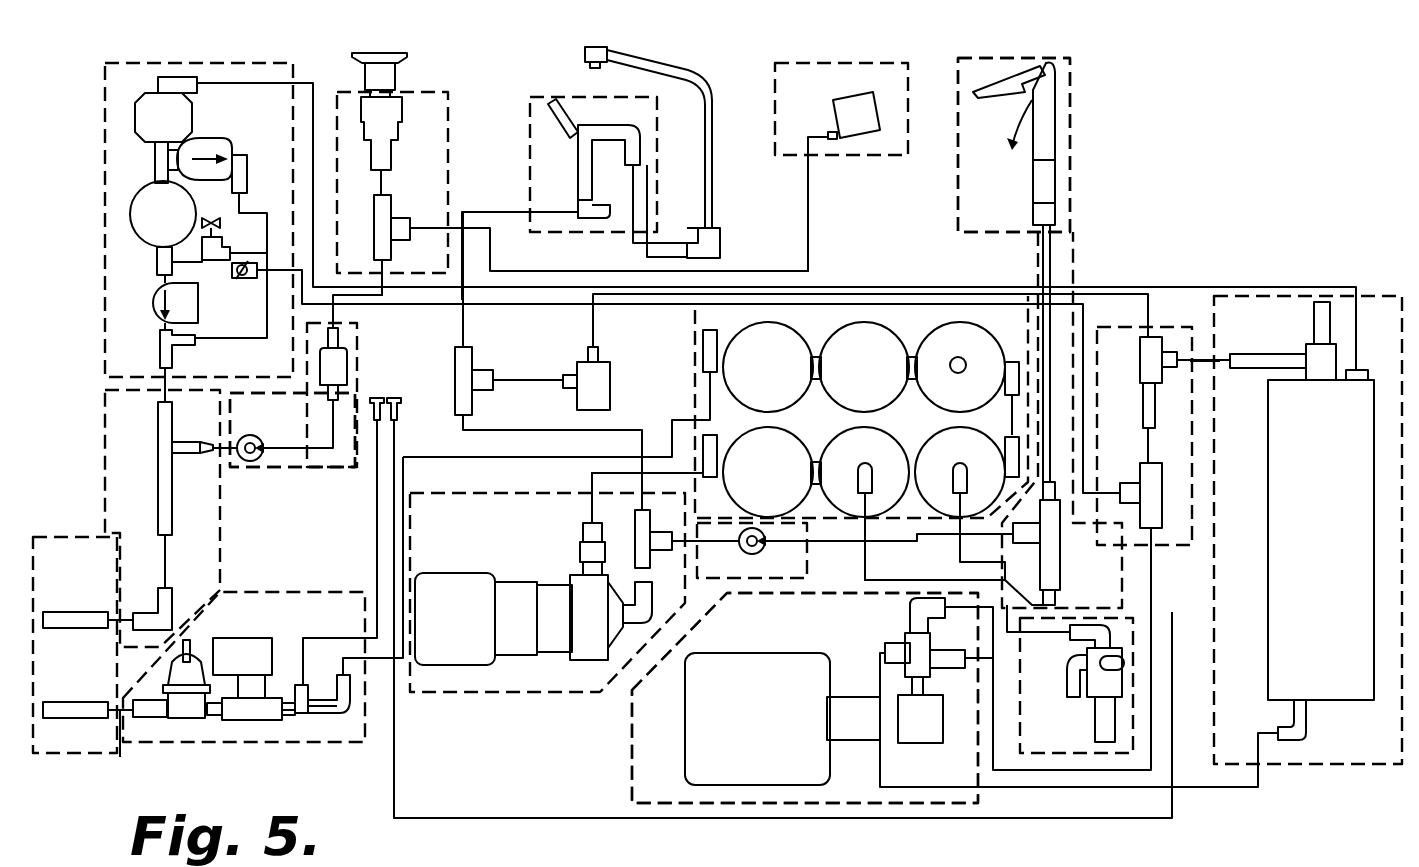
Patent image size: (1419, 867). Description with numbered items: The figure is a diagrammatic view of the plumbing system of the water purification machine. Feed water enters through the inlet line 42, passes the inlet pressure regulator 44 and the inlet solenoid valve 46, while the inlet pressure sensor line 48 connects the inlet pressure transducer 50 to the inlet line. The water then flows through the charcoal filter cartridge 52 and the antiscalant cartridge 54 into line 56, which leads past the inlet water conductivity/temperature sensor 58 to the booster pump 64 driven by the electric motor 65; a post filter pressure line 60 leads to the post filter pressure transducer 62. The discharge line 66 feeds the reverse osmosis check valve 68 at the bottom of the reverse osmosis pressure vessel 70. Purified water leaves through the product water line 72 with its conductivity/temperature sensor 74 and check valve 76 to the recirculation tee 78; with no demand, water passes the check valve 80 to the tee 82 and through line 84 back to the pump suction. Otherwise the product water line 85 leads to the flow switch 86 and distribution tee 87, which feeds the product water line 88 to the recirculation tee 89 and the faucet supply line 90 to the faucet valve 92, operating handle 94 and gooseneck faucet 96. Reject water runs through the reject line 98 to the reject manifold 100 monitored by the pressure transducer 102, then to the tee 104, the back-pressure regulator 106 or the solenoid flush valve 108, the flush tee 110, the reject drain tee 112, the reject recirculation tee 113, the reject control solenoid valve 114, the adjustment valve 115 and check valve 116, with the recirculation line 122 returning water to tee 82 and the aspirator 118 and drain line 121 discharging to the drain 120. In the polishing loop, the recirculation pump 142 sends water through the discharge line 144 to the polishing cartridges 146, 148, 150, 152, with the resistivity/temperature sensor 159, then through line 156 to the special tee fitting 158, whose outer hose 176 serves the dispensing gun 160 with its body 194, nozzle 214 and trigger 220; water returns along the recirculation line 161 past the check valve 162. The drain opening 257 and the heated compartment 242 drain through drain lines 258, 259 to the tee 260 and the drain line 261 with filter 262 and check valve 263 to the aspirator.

The reject manifold 100 is at (103, 304).
The pressure transducer 102 is at (175, 113).
The tee 104 is at (165, 160).
The back-pressure regulator 106 is at (146, 203).
The solenoid flush valve 108 is at (215, 147).
The flush tee 110 is at (270, 244).
The reject drain tee 112 is at (160, 344).
The reject recirculation tee 113 is at (165, 262).
The reject control solenoid valve 114 is at (157, 298).
The adjustment valve 115 is at (219, 238).
The check valve 116 is at (244, 276).
The aspirator 118 is at (160, 445).
The drain 120 is at (97, 612).
The drain line 121 is at (168, 555).
The recirculation line 122 is at (446, 305).
The inlet line 42 is at (121, 757).
The inlet pressure regulator 44 is at (182, 712).
The inlet solenoid valve 46 is at (270, 714).
The inlet pressure sensor line 48 is at (377, 565).
The inlet pressure transducer 50 is at (386, 388).
The post filter pressure transducer 62 is at (398, 400).
The filter cartridge 52 is at (757, 433).
The cartridge 54 is at (850, 433).
The line 56 is at (905, 581).
The inlet water conductivity/temperature sensor 58 is at (1108, 718).
The post filter pressure line 60 is at (1160, 822).
The booster pump 64 is at (929, 736).
The electric motor 65 is at (768, 668).
The discharge line 66 is at (1038, 796).
The reverse osmosis check valve 68 is at (1308, 729).
The reverse osmosis pressure vessel 70 is at (1280, 614).
The product water line 72 is at (1200, 363).
The conductivity/temperature sensor 74 is at (1314, 319).
The check valve 76 is at (1266, 354).
The recirculation tee 78 is at (1140, 356).
The check valve 80 is at (1144, 406).
The tee 82 is at (1160, 479).
The line 84 is at (1153, 598).
The product water line 85 is at (865, 294).
The flow switch 86 is at (612, 372).
The distribution tee 87 is at (468, 358).
The product water line 88 is at (512, 430).
The recirculation tee 89 is at (636, 526).
The faucet supply line 90 is at (518, 212).
The faucet valve 92 is at (589, 124).
The operating handle 94 is at (548, 117).
The telescoping gooseneck faucet 96 is at (665, 72).
The reject line 98 is at (1175, 287).
The recirculation pump 142 is at (528, 588).
The discharge line 144 is at (596, 476).
The polishing cartridge 146 is at (783, 338).
The polishing cartridge 148 is at (880, 340).
The polishing cartridge 150 is at (973, 334).
The polishing cartridge 152 is at (945, 444).
The line 156 is at (963, 554).
The special tee fitting 158 is at (1056, 574).
The polished water resistivity/temperature sensor 159 is at (965, 371).
The dispensing gun 160 is at (1052, 110).
The recirculation line 161 is at (825, 543).
The check valve 162 is at (757, 549).
The outer hose 176 is at (1050, 257).
The body 194 is at (1052, 172).
The nozzle 214 is at (990, 92).
The trigger 220 is at (1018, 152).
The compartment 242 is at (852, 133).
The drain opening 257 is at (383, 52).
The drain line 258 is at (383, 182).
The drain line 259 is at (740, 270).
The tee 260 is at (388, 232).
The drain line 261 is at (311, 448).
The filter 262 is at (347, 362).
The check valve 263 is at (256, 462).